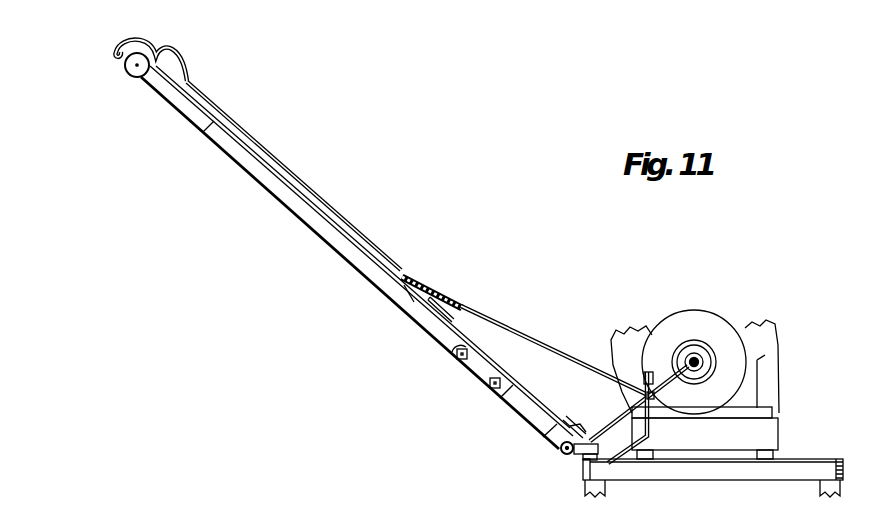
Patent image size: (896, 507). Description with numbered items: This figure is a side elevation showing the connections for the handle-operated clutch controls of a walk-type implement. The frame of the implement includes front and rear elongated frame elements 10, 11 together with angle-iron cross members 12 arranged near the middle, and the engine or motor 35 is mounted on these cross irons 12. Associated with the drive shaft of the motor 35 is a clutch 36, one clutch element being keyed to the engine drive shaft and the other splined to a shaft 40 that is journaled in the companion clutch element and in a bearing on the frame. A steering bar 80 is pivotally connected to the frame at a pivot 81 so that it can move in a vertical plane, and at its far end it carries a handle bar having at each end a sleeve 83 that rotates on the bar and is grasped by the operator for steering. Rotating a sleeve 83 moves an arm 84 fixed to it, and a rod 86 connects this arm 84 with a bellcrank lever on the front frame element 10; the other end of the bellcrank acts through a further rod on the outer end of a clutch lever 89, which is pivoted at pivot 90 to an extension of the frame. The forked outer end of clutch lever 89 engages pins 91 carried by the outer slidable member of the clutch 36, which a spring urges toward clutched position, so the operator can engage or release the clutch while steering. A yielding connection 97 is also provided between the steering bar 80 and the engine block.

The front elongated frame element 10 is at (583, 462).
The rear elongated frame element 11 is at (843, 460).
The angle iron frame element 12 is at (703, 470).
The engine or motor 35 is at (772, 371).
The clutch 36 is at (712, 320).
The shaft 40 is at (703, 362).
The steering bar 80 is at (348, 263).
The pivotal connection 81 is at (560, 448).
The sleeve 83 is at (131, 70).
The arm 84 is at (150, 42).
The rod 86 is at (208, 120).
The clutch lever 89 is at (612, 418).
The pivot 90 is at (651, 372).
The pins 91 is at (684, 341).
The yielding connection 97 is at (537, 343).